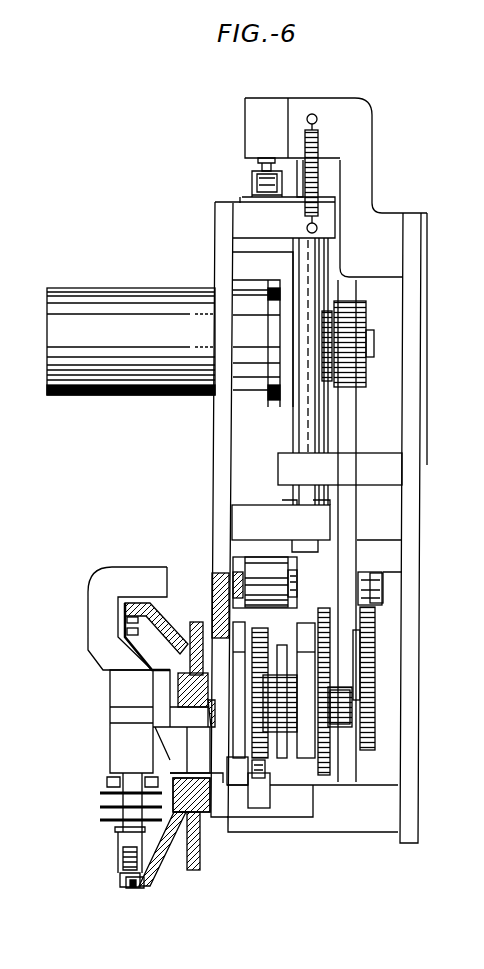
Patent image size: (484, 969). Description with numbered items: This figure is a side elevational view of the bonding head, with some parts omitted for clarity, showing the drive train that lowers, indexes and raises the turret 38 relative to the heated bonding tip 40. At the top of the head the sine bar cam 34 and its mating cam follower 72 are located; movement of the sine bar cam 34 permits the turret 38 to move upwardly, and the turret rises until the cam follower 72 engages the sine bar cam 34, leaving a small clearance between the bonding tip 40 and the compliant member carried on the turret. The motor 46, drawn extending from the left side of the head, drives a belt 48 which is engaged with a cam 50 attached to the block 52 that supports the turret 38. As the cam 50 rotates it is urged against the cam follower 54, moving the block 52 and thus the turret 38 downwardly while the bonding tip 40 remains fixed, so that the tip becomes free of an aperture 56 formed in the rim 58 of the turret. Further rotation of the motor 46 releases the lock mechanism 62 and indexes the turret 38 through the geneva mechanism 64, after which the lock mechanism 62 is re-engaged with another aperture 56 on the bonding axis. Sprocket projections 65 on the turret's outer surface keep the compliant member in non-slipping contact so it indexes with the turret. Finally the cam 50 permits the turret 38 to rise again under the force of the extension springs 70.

The sine bar cam 34 is at (258, 160).
The turret 38 is at (166, 889).
The bonding tip 40 is at (125, 876).
The motor 46 is at (150, 287).
The belt 48 is at (358, 437).
The cam 50 is at (372, 683).
The block 52 is at (305, 621).
The cam follower 54 is at (378, 606).
The aperture 56 is at (122, 633).
The rim 58 is at (136, 889).
The lock mechanism 62 is at (240, 565).
The geneva mechanism 64 is at (200, 857).
The sprocket projections 65 is at (133, 883).
The extension springs 70 is at (320, 150).
The cam follower 72 is at (252, 180).